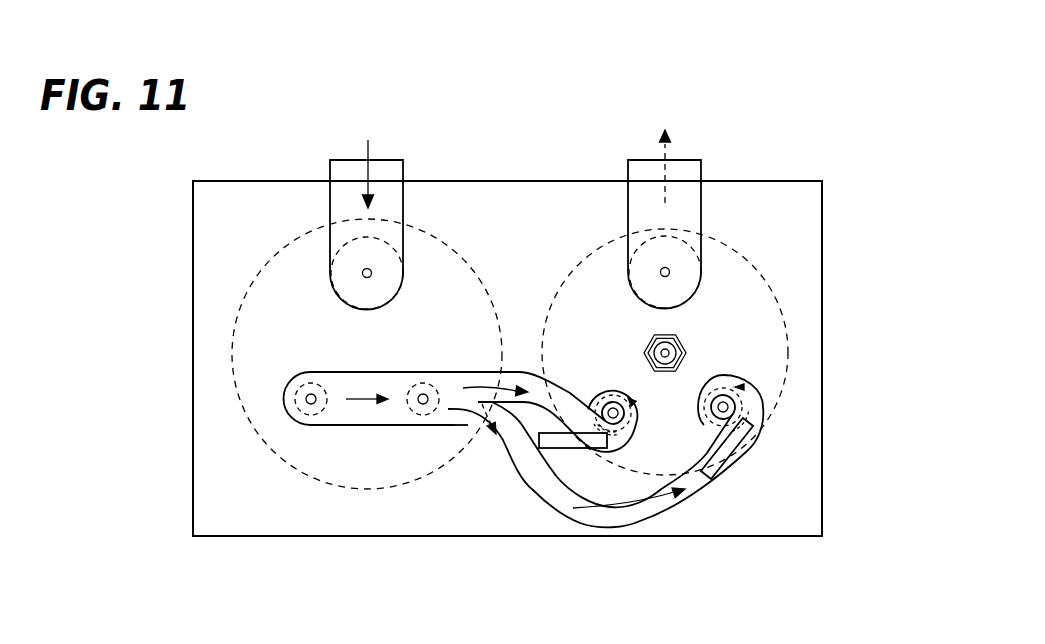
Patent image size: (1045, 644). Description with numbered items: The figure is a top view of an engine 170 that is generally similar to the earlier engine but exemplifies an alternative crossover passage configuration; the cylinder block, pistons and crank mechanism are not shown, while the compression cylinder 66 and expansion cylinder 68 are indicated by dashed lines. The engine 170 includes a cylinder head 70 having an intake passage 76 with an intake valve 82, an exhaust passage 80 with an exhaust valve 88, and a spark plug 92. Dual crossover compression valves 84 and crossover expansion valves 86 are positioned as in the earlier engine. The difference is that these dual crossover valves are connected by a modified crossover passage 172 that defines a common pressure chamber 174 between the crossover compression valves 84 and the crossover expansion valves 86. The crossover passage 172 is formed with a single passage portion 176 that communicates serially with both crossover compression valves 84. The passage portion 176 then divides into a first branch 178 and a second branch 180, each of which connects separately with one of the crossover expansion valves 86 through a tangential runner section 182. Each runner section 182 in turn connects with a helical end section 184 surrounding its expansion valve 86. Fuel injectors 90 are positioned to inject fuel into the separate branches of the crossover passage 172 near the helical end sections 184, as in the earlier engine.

The engine 170 is at (534, 158).
The cylinder head 70 is at (843, 192).
The intake passage 76 is at (343, 160).
The exhaust passage 80 is at (683, 160).
The intake valve 82 is at (371, 270).
The exhaust valve 88 is at (668, 268).
The compression cylinder 66 is at (286, 470).
The expansion cylinder 68 is at (778, 300).
The spark plug 92 is at (682, 338).
The single passage portion 176 is at (367, 426).
The crossover compression valves 84 is at (308, 394).
The common pressure chamber 174 is at (443, 424).
The crossover passage 172 is at (464, 443).
The second branch 180 is at (556, 385).
The tangential runner section 182 is at (572, 395).
The first branch 178 is at (592, 528).
The helical end section 184 is at (642, 419).
The crossover expansion valves 86 is at (618, 418).
The fuel injectors 90 is at (558, 450).